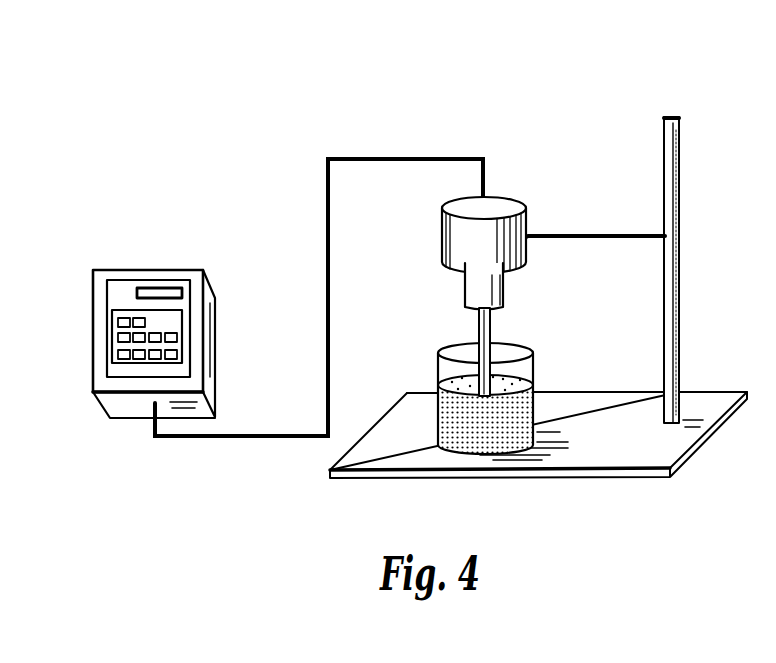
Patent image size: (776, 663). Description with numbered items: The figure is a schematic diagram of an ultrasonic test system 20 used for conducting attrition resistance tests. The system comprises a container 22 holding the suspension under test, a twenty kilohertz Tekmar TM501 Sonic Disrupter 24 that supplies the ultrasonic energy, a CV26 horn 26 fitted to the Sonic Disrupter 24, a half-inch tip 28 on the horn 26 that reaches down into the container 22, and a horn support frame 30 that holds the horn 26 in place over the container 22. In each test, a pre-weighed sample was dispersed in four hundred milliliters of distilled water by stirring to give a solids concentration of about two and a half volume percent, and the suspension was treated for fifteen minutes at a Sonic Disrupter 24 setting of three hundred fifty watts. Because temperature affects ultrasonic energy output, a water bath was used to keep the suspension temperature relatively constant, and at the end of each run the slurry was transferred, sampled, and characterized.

The ultrasonic test system 20 is at (306, 146).
The container 22 is at (457, 437).
The Sonic Disrupter 24 is at (152, 270).
The horn 26 is at (498, 207).
The tip 28 is at (490, 333).
The horn support frame 30 is at (613, 234).